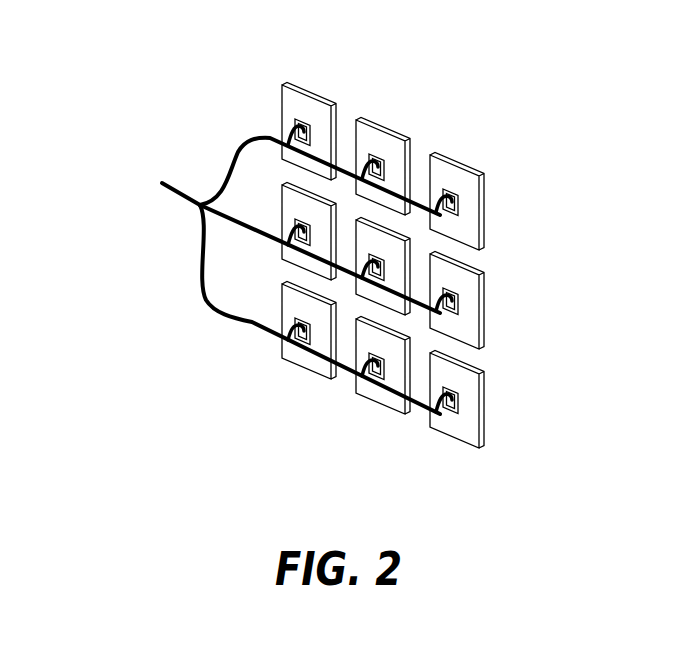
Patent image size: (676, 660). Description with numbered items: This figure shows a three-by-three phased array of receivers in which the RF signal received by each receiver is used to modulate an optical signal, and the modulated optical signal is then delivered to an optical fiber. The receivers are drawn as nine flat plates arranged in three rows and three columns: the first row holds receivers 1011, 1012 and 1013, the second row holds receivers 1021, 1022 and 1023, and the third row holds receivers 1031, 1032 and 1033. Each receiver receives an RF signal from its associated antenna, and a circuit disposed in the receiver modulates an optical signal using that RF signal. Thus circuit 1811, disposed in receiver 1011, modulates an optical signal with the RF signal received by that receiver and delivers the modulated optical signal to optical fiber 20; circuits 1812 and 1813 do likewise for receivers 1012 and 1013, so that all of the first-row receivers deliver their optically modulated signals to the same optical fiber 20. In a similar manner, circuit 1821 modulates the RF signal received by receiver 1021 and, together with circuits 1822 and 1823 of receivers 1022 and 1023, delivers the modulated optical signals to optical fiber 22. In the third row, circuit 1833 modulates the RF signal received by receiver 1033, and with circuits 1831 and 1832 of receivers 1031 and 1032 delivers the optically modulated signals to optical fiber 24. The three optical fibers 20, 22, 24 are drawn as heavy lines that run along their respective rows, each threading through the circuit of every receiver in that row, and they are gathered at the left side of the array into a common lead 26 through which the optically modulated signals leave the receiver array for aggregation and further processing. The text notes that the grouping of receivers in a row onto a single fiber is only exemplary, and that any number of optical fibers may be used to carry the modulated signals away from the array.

The receiver 1011 is at (295, 90).
The receiver 1012 is at (383, 167).
The receiver 1013 is at (459, 167).
The receiver 1021 is at (309, 232).
The receiver 1022 is at (383, 267).
The receiver 1023 is at (457, 301).
The receiver 1031 is at (307, 361).
The receiver 1032 is at (383, 366).
The receiver 1033 is at (467, 433).
The circuit 1811 is at (302, 127).
The circuit 1812 is at (370, 170).
The circuit 1813 is at (447, 205).
The circuit 1821 is at (297, 224).
The circuit 1822 is at (370, 269).
The circuit 1823 is at (444, 303).
The circuit 1831 is at (296, 332).
The circuit 1832 is at (370, 368).
The circuit 1833 is at (443, 405).
The optical fiber 20 is at (418, 212).
The optical fiber 22 is at (418, 312).
The optical fiber 24 is at (208, 307).
The lead wire 26 is at (166, 187).